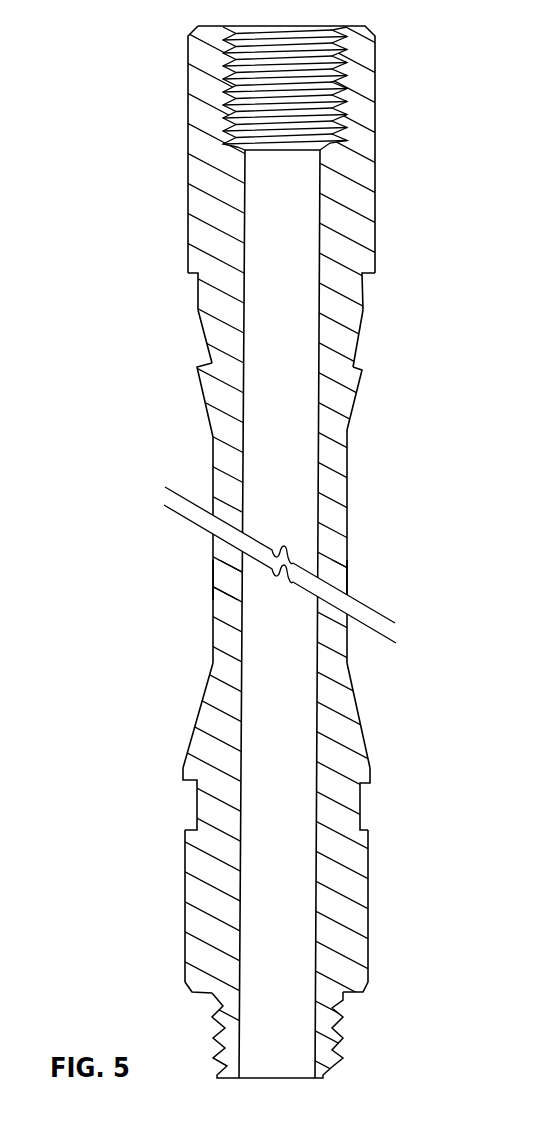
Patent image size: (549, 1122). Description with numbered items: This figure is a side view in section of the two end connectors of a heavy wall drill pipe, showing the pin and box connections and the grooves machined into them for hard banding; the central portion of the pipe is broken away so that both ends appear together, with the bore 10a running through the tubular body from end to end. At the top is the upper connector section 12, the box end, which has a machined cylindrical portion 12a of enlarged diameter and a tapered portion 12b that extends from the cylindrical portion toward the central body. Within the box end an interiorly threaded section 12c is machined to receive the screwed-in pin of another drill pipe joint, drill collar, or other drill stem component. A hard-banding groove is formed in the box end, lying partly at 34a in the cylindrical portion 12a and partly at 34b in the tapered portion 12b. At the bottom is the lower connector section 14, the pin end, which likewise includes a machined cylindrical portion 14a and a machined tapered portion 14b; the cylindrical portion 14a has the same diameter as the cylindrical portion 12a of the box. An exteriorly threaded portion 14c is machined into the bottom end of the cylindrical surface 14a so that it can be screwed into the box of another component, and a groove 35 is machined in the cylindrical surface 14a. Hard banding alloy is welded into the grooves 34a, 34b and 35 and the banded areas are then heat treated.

The upper connector section 12 is at (375, 90).
The cylindrical portion 12a is at (188, 56).
The tapered portion 12b is at (356, 406).
The interiorly threaded section 12c is at (330, 40).
The groove 34a is at (363, 297).
The groove 34b is at (355, 343).
The lower connector section 14 is at (368, 893).
The cylindrical portion 14a is at (185, 912).
The tapered portion 14b is at (357, 713).
The exteriorly threaded portion 14c is at (347, 1028).
The groove 35 is at (361, 807).
The bore 10a is at (298, 1037).